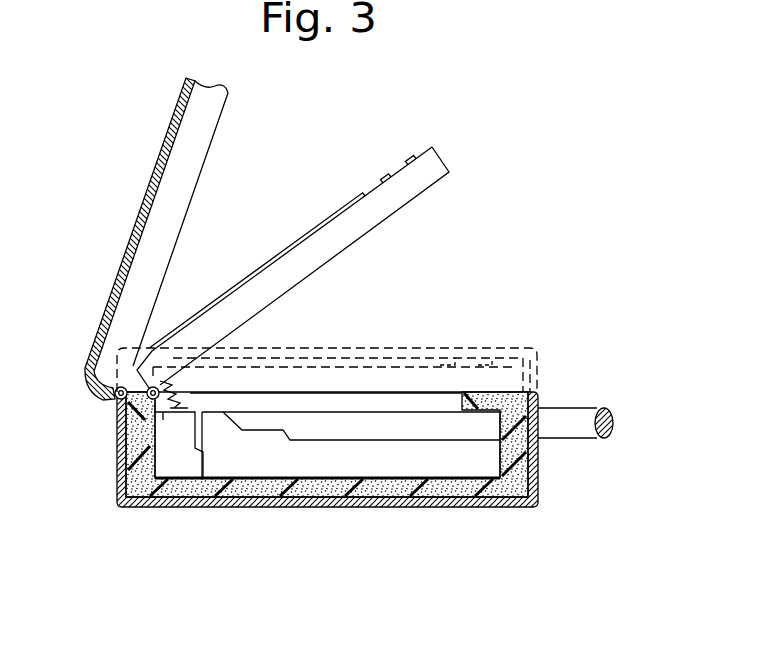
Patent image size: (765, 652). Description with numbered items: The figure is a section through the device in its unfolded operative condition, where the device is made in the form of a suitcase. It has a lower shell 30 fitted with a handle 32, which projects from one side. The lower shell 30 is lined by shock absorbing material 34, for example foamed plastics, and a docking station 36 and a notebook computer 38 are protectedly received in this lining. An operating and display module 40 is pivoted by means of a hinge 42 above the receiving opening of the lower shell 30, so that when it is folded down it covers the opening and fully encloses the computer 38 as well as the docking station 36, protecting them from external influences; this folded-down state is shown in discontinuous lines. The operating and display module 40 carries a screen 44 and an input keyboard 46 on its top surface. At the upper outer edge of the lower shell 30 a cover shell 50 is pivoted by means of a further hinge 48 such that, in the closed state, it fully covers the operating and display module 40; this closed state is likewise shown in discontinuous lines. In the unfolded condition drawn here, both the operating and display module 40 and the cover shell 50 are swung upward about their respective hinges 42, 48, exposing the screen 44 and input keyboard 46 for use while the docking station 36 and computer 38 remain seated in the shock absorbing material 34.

The lower shell 30 is at (112, 457).
The handle 32 is at (614, 424).
The shock absorbing material 34 is at (123, 493).
The docking station 36 is at (178, 457).
The notebook computer 38 is at (382, 455).
The operating and display module 40 is at (405, 210).
The hinge 42 is at (116, 423).
The screen 44 is at (290, 243).
The input keyboard 46 is at (408, 156).
The hinge 48 is at (114, 397).
The cover shell 50 is at (138, 190).